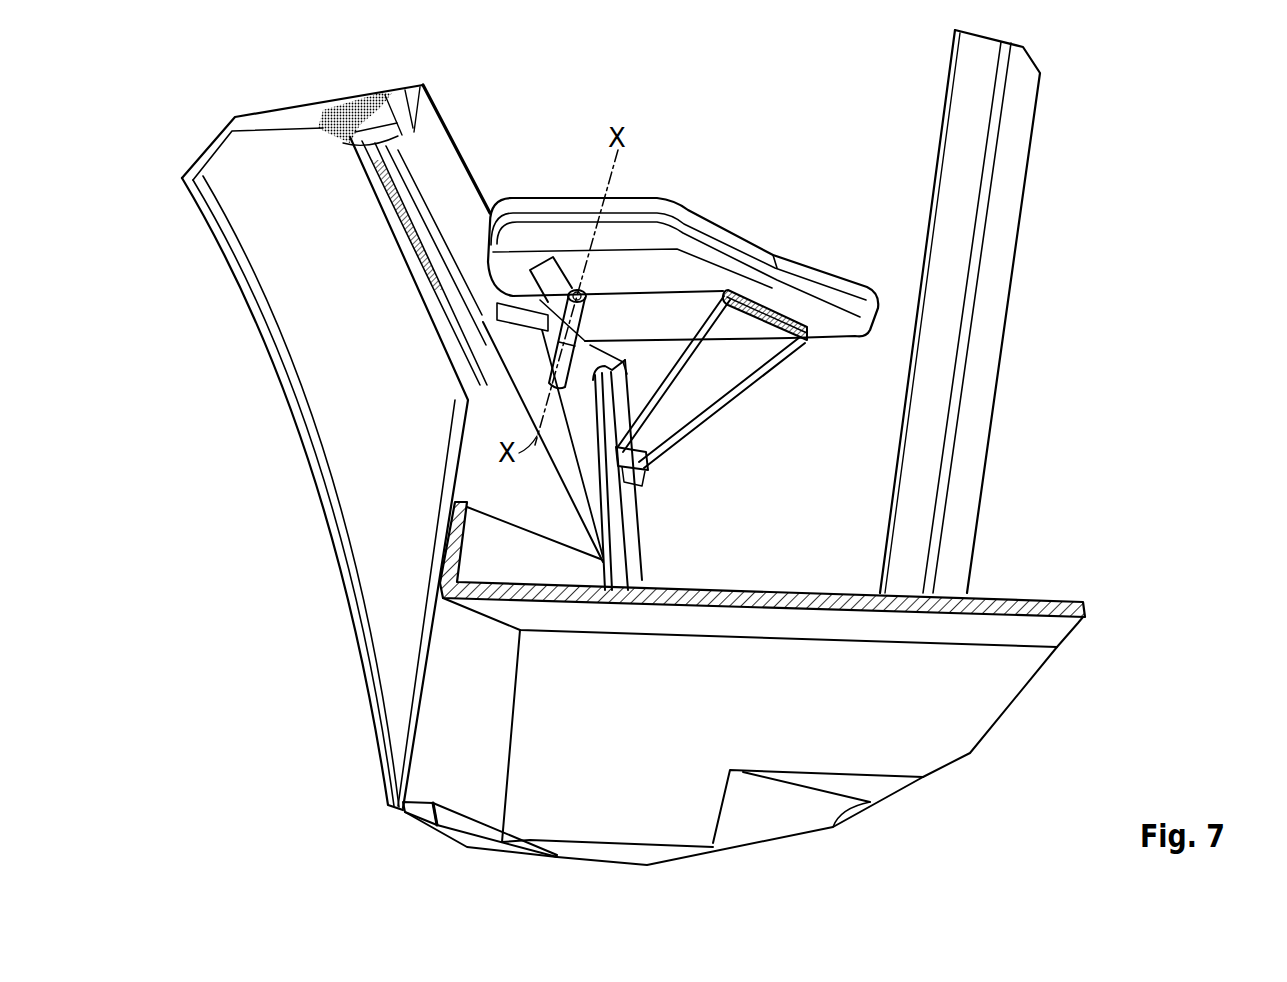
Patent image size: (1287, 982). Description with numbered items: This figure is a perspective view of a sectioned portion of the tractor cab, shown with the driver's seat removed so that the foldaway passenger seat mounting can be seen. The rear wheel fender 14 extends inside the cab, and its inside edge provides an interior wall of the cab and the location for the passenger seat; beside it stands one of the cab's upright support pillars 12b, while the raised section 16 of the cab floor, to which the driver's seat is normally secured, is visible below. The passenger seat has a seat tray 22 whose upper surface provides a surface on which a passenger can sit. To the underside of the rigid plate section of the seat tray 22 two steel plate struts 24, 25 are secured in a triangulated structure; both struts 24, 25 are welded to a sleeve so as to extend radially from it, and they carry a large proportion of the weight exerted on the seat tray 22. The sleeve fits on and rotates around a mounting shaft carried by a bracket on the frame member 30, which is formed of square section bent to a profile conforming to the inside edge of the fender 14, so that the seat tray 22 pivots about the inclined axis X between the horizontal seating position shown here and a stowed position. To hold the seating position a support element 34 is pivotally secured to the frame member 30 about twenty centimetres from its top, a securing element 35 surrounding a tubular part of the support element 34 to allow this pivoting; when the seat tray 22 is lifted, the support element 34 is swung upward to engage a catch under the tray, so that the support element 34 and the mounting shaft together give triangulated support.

The fender 14 is at (240, 272).
The upright support pillar 12b is at (1032, 163).
The seat tray 22 is at (818, 325).
The strut 24 is at (650, 320).
The strut 25 is at (547, 283).
The frame member 30 is at (640, 522).
The support element 34 is at (728, 413).
The securing element 35 is at (650, 478).
The raised section 16 is at (882, 617).